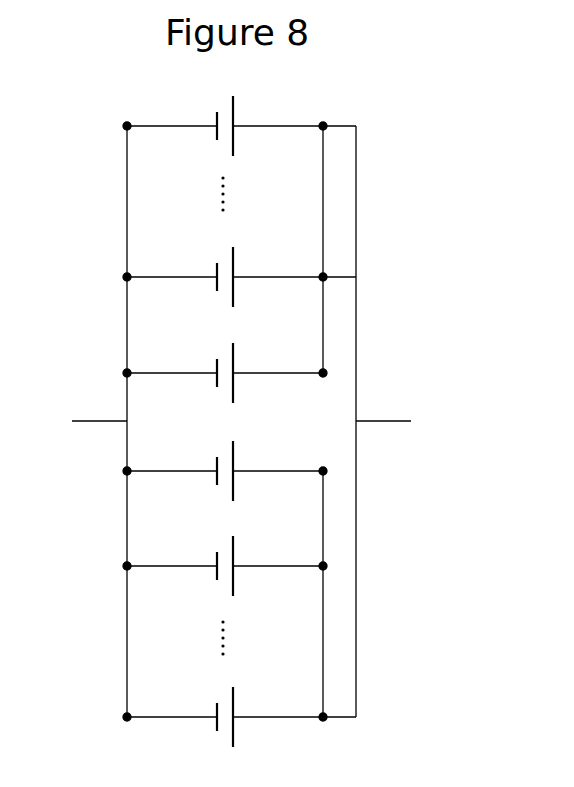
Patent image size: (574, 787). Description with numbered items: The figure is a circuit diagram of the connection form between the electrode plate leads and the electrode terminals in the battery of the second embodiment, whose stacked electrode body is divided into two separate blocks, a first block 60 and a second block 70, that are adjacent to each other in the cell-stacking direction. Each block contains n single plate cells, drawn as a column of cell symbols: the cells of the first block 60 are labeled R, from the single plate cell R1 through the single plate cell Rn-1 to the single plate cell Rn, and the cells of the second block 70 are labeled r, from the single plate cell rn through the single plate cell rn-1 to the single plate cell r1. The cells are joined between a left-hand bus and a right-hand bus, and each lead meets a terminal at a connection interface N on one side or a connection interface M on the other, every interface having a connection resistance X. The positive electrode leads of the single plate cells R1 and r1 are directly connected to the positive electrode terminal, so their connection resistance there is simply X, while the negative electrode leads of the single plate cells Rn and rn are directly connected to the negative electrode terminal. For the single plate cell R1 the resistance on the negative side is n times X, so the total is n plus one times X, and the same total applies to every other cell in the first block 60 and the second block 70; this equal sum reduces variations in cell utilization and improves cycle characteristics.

The first block 60 is at (343, 231).
The second block 70 is at (343, 653).
The connection interface N is at (125, 127).
The connection interface M is at (325, 128).
The single plate cell R1 is at (241, 130).
The single plate cell Rn-1 is at (241, 282).
The single plate cell Rn is at (225, 378).
The single plate cell rn is at (225, 475).
The single plate cell rn-1 is at (225, 570).
The single plate cell r1 is at (241, 720).